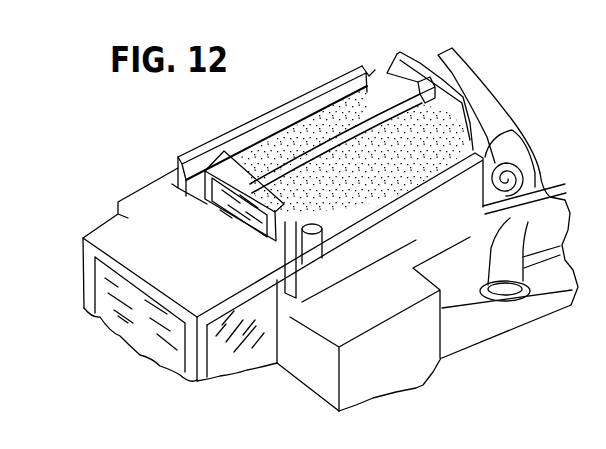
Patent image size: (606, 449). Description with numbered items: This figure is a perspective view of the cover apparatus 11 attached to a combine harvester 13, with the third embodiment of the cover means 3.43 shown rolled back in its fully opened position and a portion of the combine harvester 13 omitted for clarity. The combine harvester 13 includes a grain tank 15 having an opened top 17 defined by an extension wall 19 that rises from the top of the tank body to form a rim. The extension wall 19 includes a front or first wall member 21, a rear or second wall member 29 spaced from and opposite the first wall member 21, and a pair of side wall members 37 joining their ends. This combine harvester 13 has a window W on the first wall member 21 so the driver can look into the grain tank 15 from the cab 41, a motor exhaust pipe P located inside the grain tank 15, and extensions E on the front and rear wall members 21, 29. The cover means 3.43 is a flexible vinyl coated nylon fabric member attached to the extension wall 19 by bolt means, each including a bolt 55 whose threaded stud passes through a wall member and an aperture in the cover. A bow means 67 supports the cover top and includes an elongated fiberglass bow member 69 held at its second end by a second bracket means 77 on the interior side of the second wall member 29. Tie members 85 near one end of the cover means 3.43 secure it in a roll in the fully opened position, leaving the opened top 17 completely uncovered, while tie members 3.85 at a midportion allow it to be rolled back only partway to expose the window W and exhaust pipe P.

The cover apparatus 11 is at (86, 193).
The combine harvester 13 is at (364, 408).
The grain tank 15 is at (266, 104).
The opened top 17 is at (333, 93).
The extension wall 19 is at (240, 127).
The first wall member 21 is at (238, 137).
The second wall member 29 is at (453, 70).
The side wall members 37 is at (303, 97).
The cab 41 is at (145, 337).
The bolt 55 is at (280, 266).
The bow means 67 is at (354, 96).
The bow member 69 is at (399, 92).
The second bracket means 77 is at (425, 80).
The tie members 85 is at (487, 110).
The extensions E is at (212, 158).
The window W is at (176, 170).
The exhaust pipe P is at (303, 268).
The cover means 3.43 is at (500, 153).
The tie members 3.85 is at (588, 431).